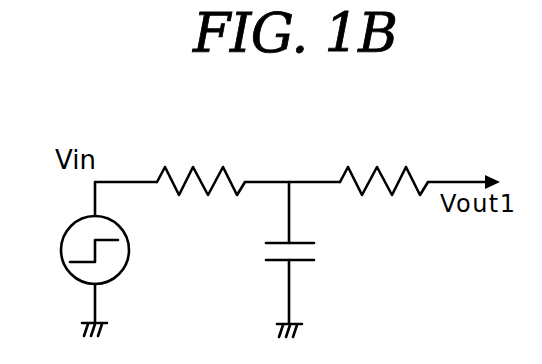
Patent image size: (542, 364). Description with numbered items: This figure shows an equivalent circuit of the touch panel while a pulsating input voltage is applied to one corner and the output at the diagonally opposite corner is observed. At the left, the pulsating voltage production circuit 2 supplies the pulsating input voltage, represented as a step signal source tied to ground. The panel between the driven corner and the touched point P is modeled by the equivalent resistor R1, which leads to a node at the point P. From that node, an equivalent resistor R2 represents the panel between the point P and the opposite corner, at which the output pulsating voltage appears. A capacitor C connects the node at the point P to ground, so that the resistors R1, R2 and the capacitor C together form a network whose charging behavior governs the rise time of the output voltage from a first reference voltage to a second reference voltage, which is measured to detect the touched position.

The pulsating voltage production circuit 2 is at (68, 234).
The equivalent resistor R1 is at (201, 165).
The equivalent resistor R2 is at (384, 165).
The capacitor C is at (274, 257).